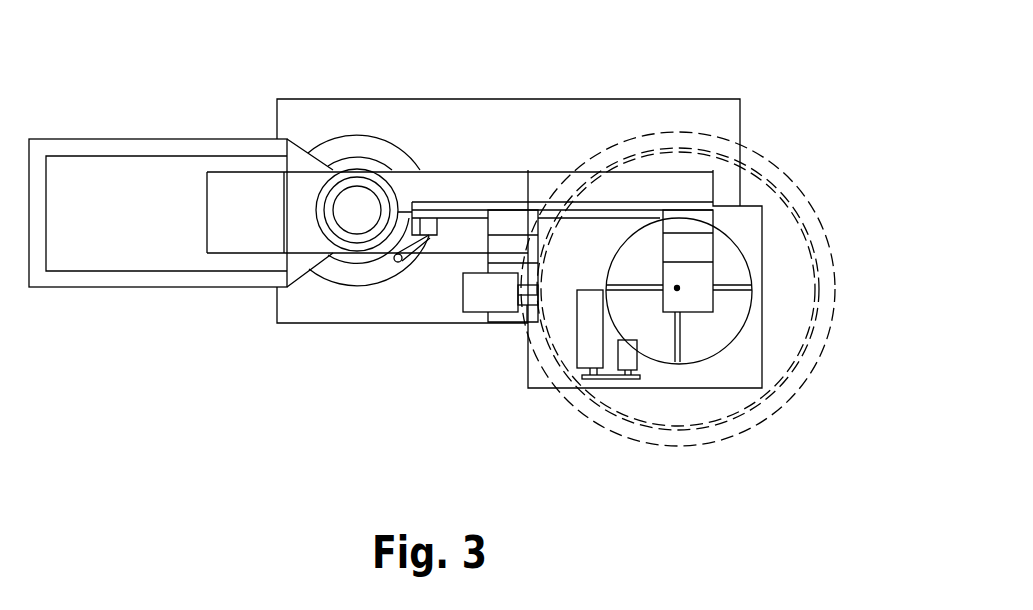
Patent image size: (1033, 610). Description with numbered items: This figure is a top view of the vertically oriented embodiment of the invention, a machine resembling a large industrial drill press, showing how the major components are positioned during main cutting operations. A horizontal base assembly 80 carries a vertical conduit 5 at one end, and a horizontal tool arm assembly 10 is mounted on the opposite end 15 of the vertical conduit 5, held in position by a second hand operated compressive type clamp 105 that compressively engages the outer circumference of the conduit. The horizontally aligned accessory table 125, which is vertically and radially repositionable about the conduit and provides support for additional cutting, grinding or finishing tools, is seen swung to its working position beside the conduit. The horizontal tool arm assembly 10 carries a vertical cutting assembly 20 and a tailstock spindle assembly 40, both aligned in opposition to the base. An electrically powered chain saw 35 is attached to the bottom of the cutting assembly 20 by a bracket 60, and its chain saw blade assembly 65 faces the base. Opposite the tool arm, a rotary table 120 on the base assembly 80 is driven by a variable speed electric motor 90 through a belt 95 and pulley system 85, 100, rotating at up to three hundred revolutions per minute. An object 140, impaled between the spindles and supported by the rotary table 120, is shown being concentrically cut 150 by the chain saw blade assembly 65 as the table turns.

The vertical conduit 5 is at (334, 130).
The horizontal tool arm assembly 10 is at (460, 152).
The opposite end of the vertical conduit 15 is at (333, 170).
The vertical cutting assembly 20 is at (457, 318).
The electrically powered chain saw 35 is at (450, 327).
The tailstock spindle assembly 40 is at (729, 242).
The bracket 60 is at (494, 343).
The chain saw blade assembly 65 is at (555, 271).
The horizontal base assembly 80 is at (519, 212).
The pulley 85 is at (579, 421).
The variable speed electric motor 90 is at (552, 360).
The belt 95 is at (643, 412).
The pulley 100 is at (700, 420).
The second hand operated compressive type clamp 105 is at (362, 308).
The rotary table 120 is at (738, 343).
The accessory table 125 is at (181, 180).
The object 140 is at (726, 289).
The concentric cut 150 is at (729, 289).